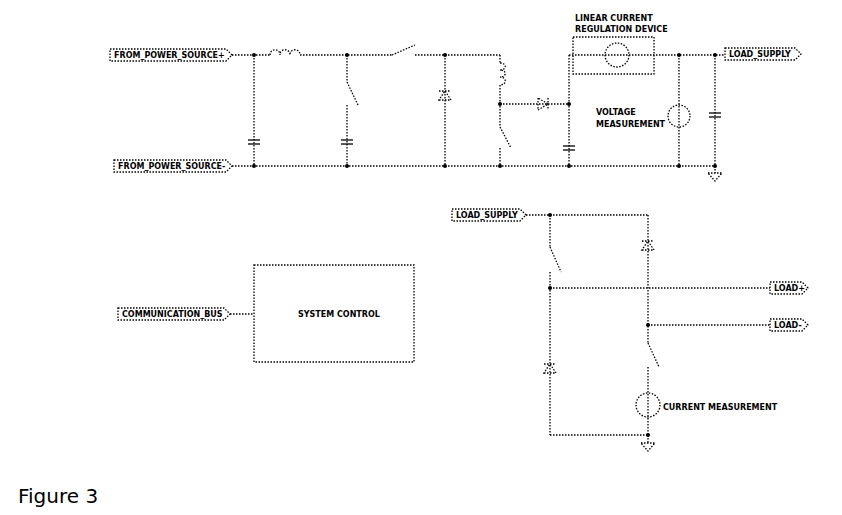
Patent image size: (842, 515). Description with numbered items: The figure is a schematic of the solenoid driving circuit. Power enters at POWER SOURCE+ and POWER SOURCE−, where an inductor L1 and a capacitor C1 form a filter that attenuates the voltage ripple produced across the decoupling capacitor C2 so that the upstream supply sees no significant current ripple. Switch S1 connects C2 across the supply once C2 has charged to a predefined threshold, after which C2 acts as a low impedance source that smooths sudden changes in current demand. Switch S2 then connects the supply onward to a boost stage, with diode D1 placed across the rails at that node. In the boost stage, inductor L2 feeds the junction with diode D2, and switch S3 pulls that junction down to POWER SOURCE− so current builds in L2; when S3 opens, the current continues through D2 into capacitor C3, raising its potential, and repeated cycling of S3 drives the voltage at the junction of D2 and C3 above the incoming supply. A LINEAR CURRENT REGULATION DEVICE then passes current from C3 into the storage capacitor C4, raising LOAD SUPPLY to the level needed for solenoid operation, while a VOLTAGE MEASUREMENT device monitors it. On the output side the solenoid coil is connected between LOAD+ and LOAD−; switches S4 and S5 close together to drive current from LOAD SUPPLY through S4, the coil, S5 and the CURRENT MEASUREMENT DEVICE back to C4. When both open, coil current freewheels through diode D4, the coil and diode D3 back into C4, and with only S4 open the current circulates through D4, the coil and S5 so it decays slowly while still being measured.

The filter inductor L1 is at (287, 56).
The filter capacitor C1 is at (267, 142).
The switch S1 is at (357, 93).
The decoupling capacitor C2 is at (374, 142).
The switch S2 is at (403, 44).
The diode D1 is at (440, 92).
The boost inductor L2 is at (519, 77).
The boost diode D2 is at (545, 104).
The switch S3 is at (510, 137).
The boost capacitor C3 is at (583, 148).
The storage capacitor C4 is at (738, 118).
The switch S4 is at (560, 259).
The diode D3 is at (643, 240).
The diode D4 is at (544, 363).
The switch S5 is at (657, 355).